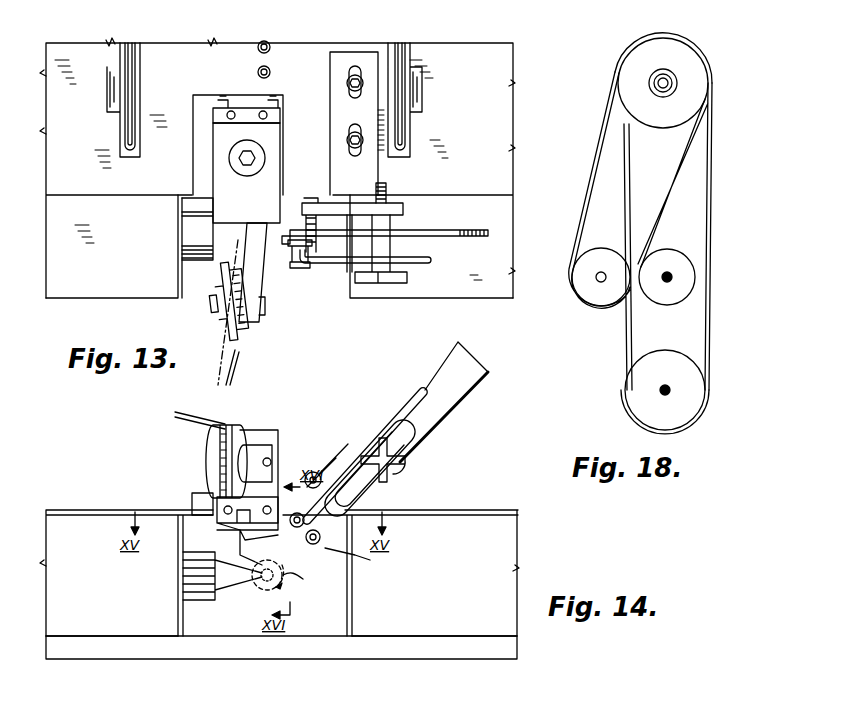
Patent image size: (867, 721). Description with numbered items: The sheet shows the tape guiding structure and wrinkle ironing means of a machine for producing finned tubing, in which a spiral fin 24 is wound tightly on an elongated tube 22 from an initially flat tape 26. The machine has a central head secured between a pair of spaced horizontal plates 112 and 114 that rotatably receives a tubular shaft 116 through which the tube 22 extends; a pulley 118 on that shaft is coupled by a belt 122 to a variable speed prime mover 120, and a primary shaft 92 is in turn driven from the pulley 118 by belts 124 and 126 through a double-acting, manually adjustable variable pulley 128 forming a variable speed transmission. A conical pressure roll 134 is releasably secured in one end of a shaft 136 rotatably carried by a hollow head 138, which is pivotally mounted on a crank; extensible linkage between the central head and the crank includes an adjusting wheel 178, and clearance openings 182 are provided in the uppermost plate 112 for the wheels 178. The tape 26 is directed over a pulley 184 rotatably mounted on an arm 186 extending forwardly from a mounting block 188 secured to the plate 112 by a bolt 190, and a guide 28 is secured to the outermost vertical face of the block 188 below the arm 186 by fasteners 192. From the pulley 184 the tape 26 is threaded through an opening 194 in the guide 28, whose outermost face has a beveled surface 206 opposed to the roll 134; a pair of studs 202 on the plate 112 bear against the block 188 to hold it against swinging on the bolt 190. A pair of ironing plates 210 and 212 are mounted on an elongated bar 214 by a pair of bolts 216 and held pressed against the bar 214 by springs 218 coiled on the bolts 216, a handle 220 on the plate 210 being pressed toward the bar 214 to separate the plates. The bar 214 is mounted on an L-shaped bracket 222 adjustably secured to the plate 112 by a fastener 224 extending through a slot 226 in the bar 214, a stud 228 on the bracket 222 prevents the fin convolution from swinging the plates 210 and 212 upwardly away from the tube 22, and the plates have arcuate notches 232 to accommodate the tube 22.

In FIG. 14, the tube 22 is at (262, 592).
In FIG. 14, the spiral fin 24 is at (292, 590).
In FIG. 13, the tape 26 is at (220, 372).
In FIG. 14, the tape 26 is at (196, 428).
In FIG. 13, the guide 28 is at (217, 173).
In FIG. 14, the guide 28 is at (215, 536).
In FIG. 18, the primary shaft 92 is at (670, 390).
In FIG. 13, the plate 112 is at (500, 108).
In FIG. 14, the plate 112 is at (468, 510).
In FIG. 14, the plate 114 is at (318, 648).
In FIG. 18, the tubular shaft 116 is at (674, 86).
In FIG. 18, the pulley 118 is at (666, 48).
In FIG. 18, the variable speed prime mover 120 is at (606, 306).
In FIG. 18, the belt 122 is at (584, 165).
In FIG. 18, the belt 124 is at (700, 212).
In FIG. 18, the belt 126 is at (700, 340).
In FIG. 18, the variable pulley 128 is at (686, 280).
In FIG. 14, the pressure roll 134 is at (232, 590).
In FIG. 13, the shaft 136 is at (190, 238).
In FIG. 13, the hollow head 138 is at (105, 288).
In FIG. 14, the hollow head 138 is at (400, 646).
In FIG. 13, the adjusting wheel 178 is at (132, 128).
In FIG. 13, the clearance openings 182 is at (128, 158).
In FIG. 13, the pulley 184 is at (220, 324).
In FIG. 14, the pulley 184 is at (244, 428).
In FIG. 13, the arm 186 is at (262, 292).
In FIG. 14, the arm 186 is at (270, 458).
In FIG. 13, the mounting block 188 is at (270, 172).
In FIG. 14, the mounting block 188 is at (272, 434).
In FIG. 13, the bolt 190 is at (238, 158).
In FIG. 14, the fasteners 192 is at (204, 504).
In FIG. 14, the opening 194 is at (232, 540).
In FIG. 13, the studs 202 is at (266, 102).
In FIG. 14, the beveled surface 206 is at (290, 530).
In FIG. 14, the ironing plate 210 is at (318, 545).
In FIG. 14, the ironing plate 212 is at (355, 560).
In FIG. 13, the bar 214 is at (478, 240).
In FIG. 14, the bar 214 is at (456, 392).
In FIG. 13, the bolts 216 is at (304, 270).
In FIG. 13, the springs 218 is at (290, 256).
In FIG. 13, the handle 220 is at (414, 250).
In FIG. 14, the handle 220 is at (400, 398).
In FIG. 13, the L-shaped bracket 222 is at (340, 128).
In FIG. 13, the fastener 224 is at (398, 288).
In FIG. 14, the fastener 224 is at (406, 452).
In FIG. 14, the slot 226 is at (380, 500).
In FIG. 13, the stud 228 is at (322, 223).
In FIG. 14, the stud 228 is at (322, 470).
In FIG. 14, the arcuate notches 232 is at (302, 580).